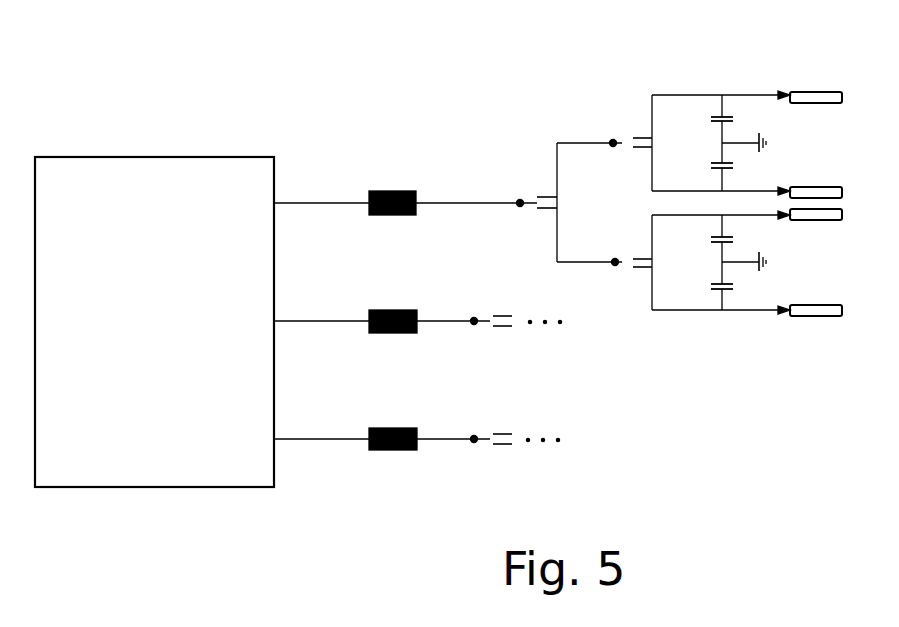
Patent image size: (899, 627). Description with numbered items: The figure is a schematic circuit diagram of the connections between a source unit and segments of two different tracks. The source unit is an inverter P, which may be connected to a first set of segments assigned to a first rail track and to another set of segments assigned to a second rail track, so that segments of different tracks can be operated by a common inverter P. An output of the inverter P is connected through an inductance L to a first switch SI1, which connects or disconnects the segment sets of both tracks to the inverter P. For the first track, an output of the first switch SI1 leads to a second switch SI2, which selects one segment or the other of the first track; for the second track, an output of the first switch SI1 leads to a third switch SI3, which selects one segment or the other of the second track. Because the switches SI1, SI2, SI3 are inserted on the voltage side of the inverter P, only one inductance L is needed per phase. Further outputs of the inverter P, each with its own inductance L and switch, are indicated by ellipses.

The inverter P is at (171, 157).
The inductance L is at (378, 191).
The first switch SI1 is at (520, 205).
The second switch SI2 is at (612, 142).
The third switch SI3 is at (614, 263).